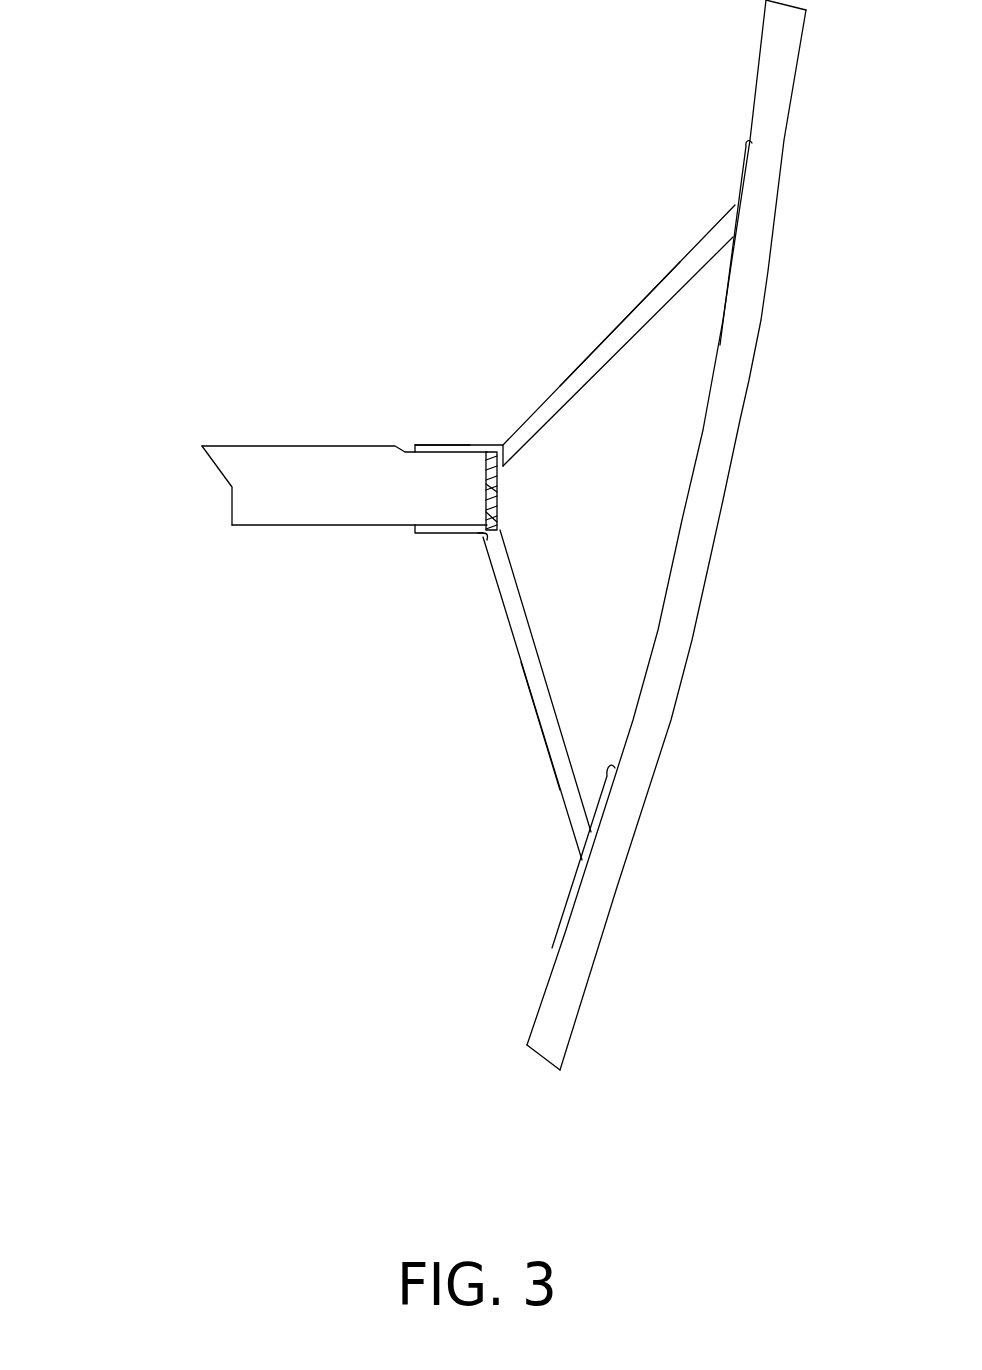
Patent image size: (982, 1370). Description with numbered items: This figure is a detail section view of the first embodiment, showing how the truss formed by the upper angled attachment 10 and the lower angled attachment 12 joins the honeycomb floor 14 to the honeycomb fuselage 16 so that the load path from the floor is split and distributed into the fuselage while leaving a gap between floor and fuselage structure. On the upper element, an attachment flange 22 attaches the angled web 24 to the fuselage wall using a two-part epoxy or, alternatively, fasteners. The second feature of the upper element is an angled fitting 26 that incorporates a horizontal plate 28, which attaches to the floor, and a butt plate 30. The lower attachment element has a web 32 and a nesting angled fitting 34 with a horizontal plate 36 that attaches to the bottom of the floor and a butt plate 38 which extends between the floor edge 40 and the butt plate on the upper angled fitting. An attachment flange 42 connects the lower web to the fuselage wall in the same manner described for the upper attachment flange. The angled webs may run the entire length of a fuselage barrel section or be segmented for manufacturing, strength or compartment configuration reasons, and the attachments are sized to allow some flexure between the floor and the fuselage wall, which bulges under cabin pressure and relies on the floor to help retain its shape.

The upper angled attachment 10 is at (622, 288).
The lower angled attachment 12 is at (503, 707).
The honeycomb floor 14 is at (242, 480).
The honeycomb fuselage 16 is at (647, 756).
The attachment flange 22 is at (737, 188).
The angled web 24 is at (587, 360).
The angled fitting 26 is at (472, 420).
The horizontal plate 28 is at (443, 445).
The butt plate 30 is at (497, 498).
The web 32 is at (540, 733).
The nesting angled fitting 34 is at (466, 568).
The horizontal plate 36 is at (442, 533).
The butt plate 38 is at (497, 517).
The floor edge 40 is at (487, 488).
The attachment flange 42 is at (572, 889).